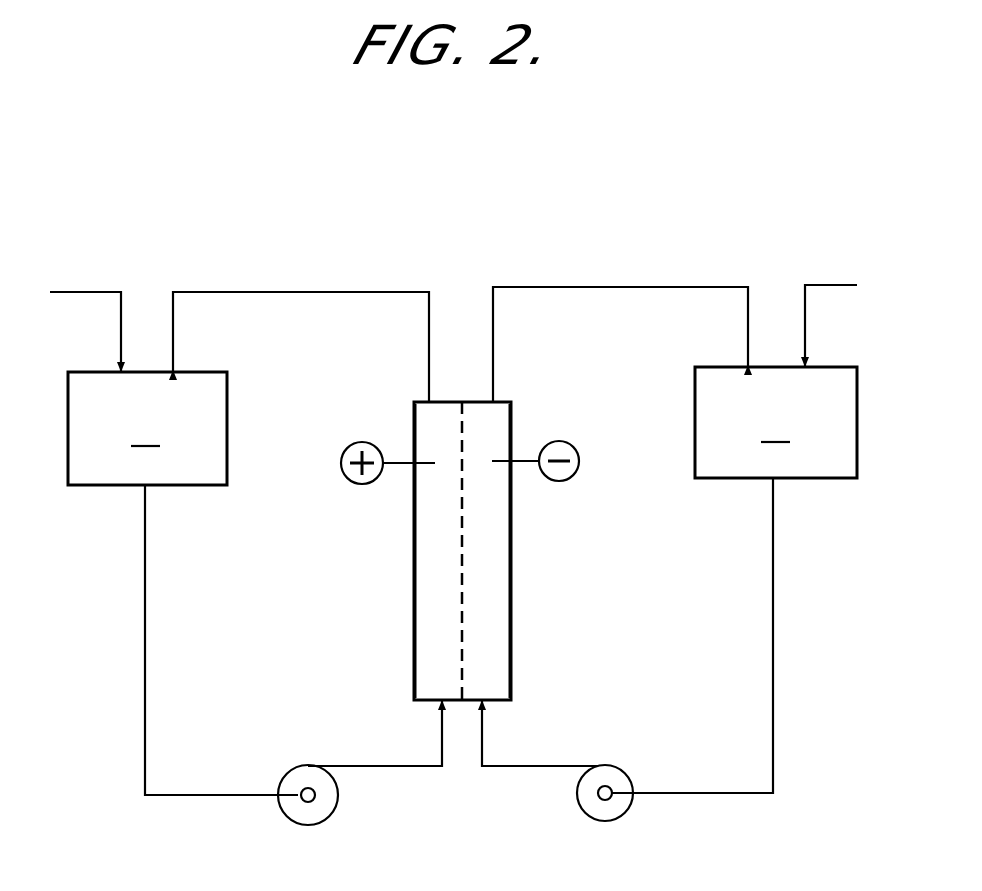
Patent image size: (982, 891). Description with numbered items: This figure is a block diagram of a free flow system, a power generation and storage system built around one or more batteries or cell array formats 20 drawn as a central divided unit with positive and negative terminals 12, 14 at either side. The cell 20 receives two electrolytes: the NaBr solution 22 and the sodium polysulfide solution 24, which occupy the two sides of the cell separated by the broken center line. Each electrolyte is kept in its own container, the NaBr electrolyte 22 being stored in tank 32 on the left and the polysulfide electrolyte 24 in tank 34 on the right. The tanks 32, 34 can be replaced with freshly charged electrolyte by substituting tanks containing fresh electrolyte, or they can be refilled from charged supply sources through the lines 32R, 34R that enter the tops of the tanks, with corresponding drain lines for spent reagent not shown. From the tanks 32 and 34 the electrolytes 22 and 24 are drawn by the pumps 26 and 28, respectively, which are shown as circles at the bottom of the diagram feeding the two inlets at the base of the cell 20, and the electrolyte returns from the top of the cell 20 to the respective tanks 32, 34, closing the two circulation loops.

The positive electrode 12 is at (400, 460).
The negative electrode 14 is at (523, 460).
The cell 20 is at (517, 607).
The NaBr electrolyte 22 is at (422, 572).
The Na2Sx electrolyte 24 is at (493, 530).
The pump 26 is at (293, 775).
The pump 28 is at (618, 775).
The container 32 is at (147, 428).
The line 32R is at (71, 292).
The container 34 is at (776, 422).
The line 34R is at (850, 262).